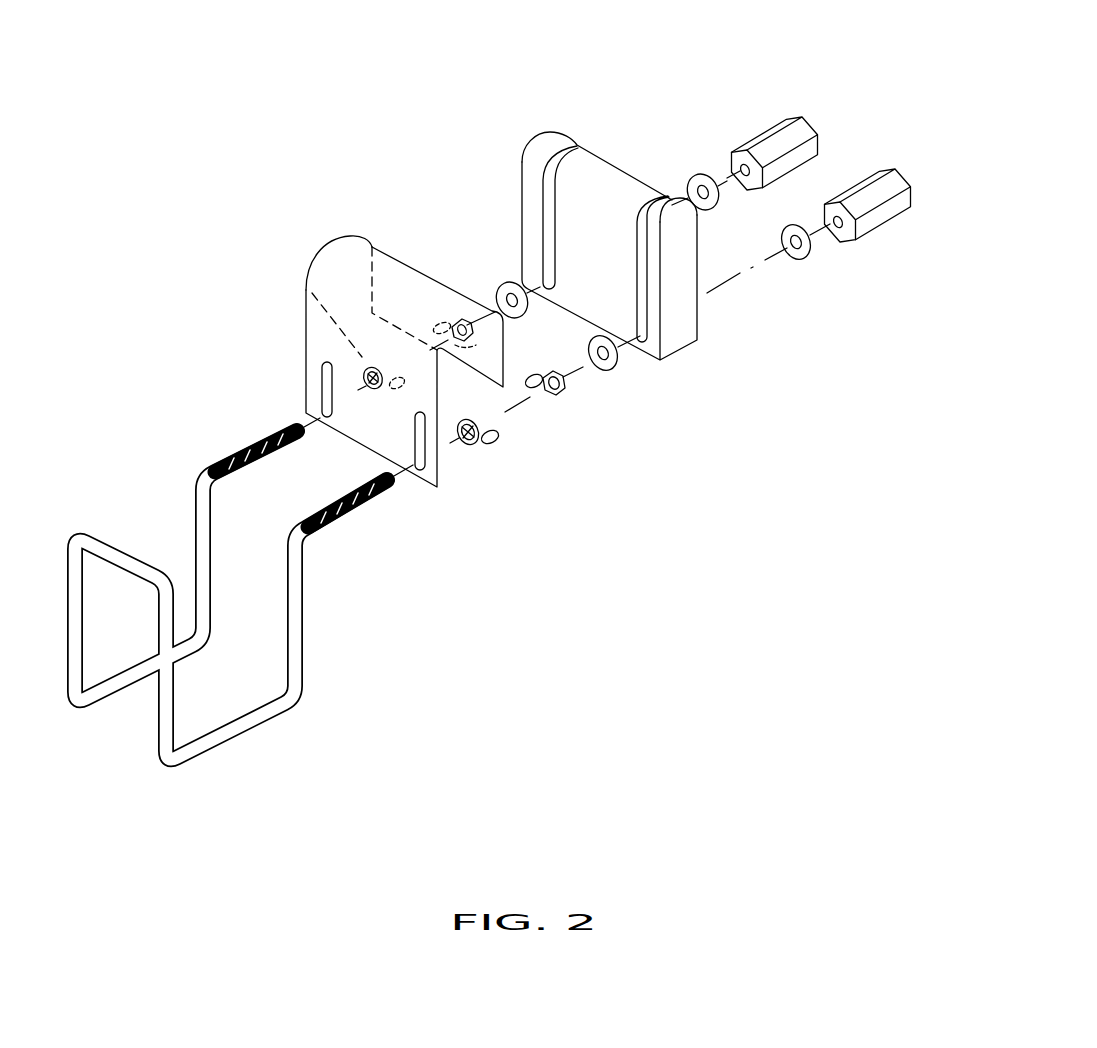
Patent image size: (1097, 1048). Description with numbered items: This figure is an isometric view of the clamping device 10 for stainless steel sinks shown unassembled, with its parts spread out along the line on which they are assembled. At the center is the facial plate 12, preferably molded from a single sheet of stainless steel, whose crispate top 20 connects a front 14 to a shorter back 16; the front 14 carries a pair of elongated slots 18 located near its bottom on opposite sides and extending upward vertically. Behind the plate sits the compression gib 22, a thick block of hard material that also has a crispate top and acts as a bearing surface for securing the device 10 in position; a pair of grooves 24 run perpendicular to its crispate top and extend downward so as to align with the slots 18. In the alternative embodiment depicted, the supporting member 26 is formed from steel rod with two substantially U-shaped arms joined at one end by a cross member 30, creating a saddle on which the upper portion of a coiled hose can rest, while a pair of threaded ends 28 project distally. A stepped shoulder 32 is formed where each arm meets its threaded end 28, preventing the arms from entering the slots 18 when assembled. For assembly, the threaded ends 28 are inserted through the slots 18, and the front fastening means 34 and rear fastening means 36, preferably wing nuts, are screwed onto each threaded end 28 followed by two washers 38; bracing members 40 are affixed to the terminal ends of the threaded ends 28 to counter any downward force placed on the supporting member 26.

The clamping device 10 is at (358, 230).
The facial plate 12 is at (380, 343).
The front 14 is at (372, 427).
The back 16 is at (487, 357).
The elongated slots 18 is at (427, 487).
The crispate top 20 is at (340, 250).
The compression gib 22 is at (588, 228).
The grooves 24 is at (808, 358).
The supporting member 26 is at (197, 547).
The threaded ends 28 is at (375, 497).
The cross member 30 is at (75, 532).
The stepped shoulder 32 is at (310, 533).
The front fastening means 34 is at (570, 492).
The rear fastening means 36 is at (718, 445).
The washers 38 is at (887, 285).
The bracing members 40 is at (890, 177).